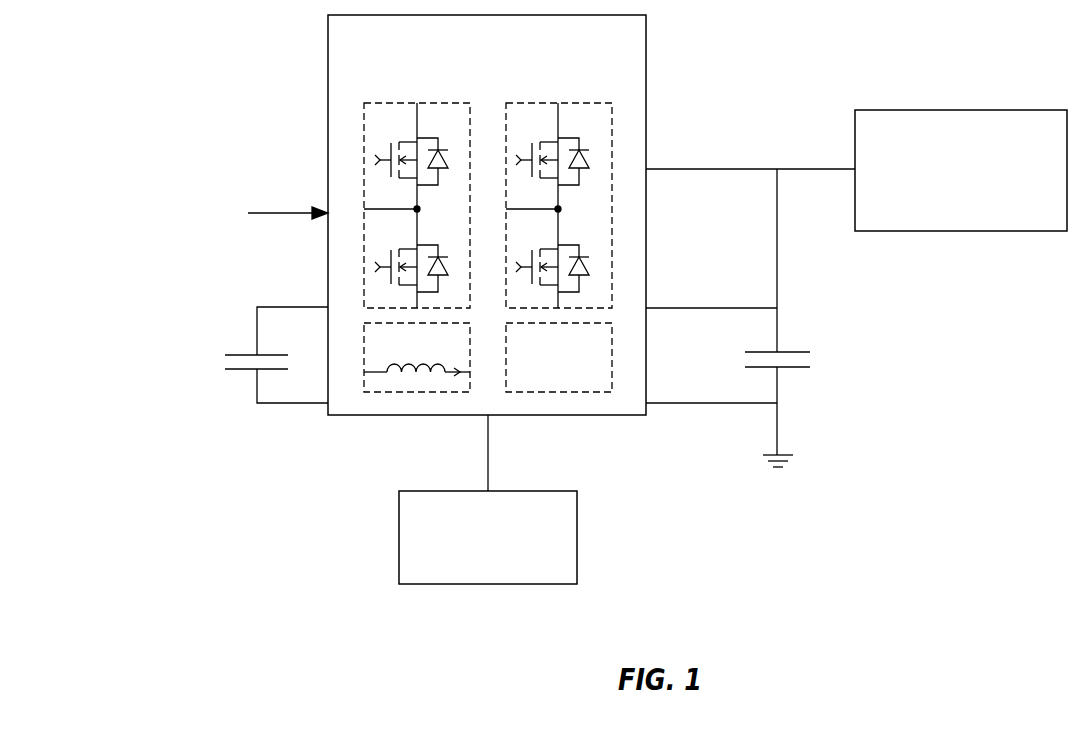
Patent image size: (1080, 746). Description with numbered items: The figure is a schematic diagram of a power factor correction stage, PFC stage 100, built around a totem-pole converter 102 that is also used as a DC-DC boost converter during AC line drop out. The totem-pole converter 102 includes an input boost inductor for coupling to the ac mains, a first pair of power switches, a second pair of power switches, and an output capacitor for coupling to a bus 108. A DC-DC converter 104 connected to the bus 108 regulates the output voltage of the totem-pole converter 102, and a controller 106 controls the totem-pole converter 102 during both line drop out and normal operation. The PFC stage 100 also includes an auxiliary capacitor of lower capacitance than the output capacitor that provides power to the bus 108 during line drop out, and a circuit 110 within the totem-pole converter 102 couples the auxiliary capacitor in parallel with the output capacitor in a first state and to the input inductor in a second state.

The PFC stage 100 is at (187, 82).
The totem-pole converter 102 is at (503, 74).
The DC-DC converter 104 is at (975, 192).
The controller 106 is at (503, 556).
The bus 108 is at (698, 169).
The circuit 110 is at (575, 362).